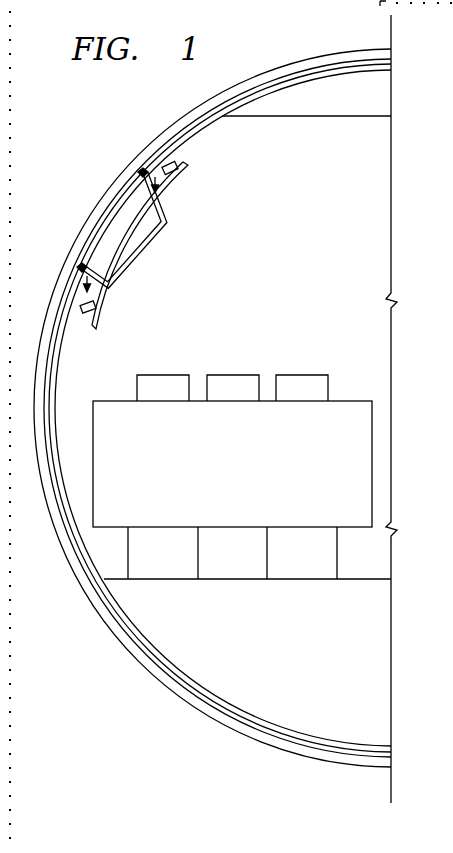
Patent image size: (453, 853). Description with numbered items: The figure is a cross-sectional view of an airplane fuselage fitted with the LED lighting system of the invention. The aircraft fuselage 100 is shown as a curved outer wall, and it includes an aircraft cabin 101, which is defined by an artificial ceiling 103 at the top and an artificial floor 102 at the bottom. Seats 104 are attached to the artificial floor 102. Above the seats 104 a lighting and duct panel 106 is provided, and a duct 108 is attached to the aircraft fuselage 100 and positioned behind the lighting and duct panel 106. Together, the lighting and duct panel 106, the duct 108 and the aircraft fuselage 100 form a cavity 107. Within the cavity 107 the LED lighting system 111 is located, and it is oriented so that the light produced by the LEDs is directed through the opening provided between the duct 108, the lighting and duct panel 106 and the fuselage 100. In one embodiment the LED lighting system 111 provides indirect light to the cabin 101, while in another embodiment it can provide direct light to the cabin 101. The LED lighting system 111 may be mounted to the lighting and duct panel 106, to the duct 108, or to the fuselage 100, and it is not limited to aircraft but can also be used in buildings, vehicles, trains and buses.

The aircraft fuselage 100 is at (278, 66).
The aircraft cabin 101 is at (329, 288).
The artificial floor 102 is at (352, 581).
The artificial ceiling 103 is at (320, 117).
The seats 104 is at (340, 400).
The lighting and duct panel 106 is at (173, 244).
The cavity 107 is at (146, 166).
The duct 108 is at (146, 205).
The LED lighting system 111 is at (182, 163).